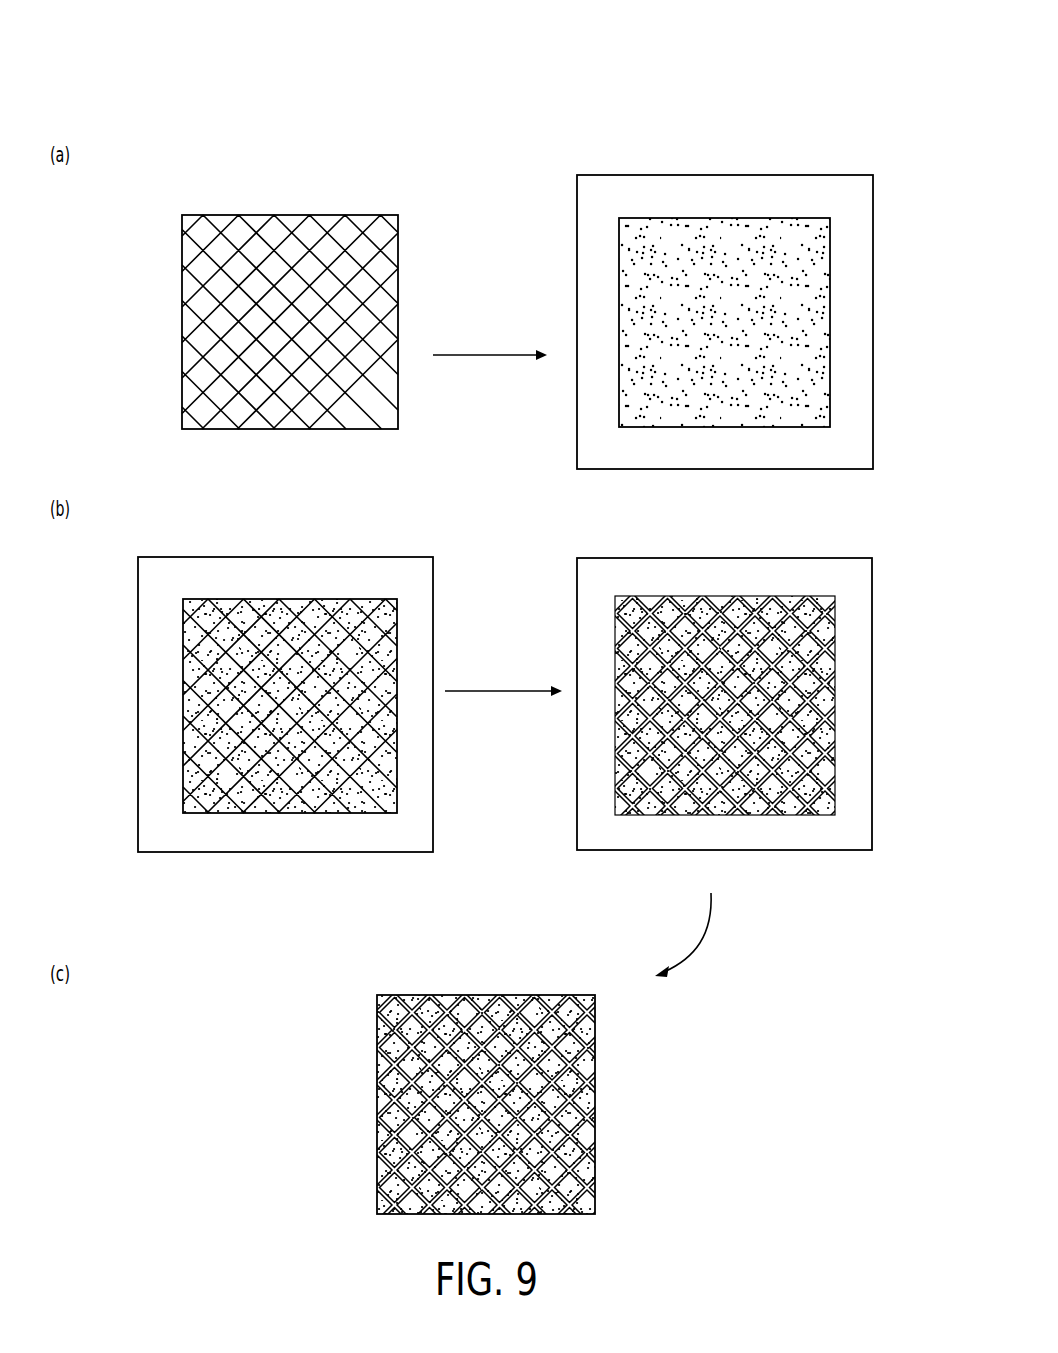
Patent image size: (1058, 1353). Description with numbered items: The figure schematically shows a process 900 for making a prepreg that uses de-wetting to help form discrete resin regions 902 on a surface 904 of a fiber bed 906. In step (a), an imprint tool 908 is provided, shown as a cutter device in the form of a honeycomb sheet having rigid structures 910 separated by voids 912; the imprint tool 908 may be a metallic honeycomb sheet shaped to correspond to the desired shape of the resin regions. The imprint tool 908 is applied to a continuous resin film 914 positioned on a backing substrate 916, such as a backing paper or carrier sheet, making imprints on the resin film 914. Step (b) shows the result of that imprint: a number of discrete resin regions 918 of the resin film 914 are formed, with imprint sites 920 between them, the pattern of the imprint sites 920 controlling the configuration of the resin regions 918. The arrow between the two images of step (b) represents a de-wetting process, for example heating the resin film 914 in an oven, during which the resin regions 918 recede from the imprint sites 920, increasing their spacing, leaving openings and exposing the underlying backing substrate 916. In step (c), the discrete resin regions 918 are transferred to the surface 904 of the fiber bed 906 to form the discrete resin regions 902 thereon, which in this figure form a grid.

The process 900 is at (790, 111).
The discrete resin regions 902 is at (590, 1124).
The surface 904 is at (515, 995).
The fiber bed 906 is at (597, 1090).
The imprint tool 908 is at (258, 215).
The rigid structures 910 is at (366, 265).
The lattice nodes 912 is at (340, 238).
The continuous resin film 914 is at (830, 328).
The backing substrate 916 is at (873, 232).
The discrete resin regions 918 is at (192, 616).
The imprint sites 920 is at (355, 642).